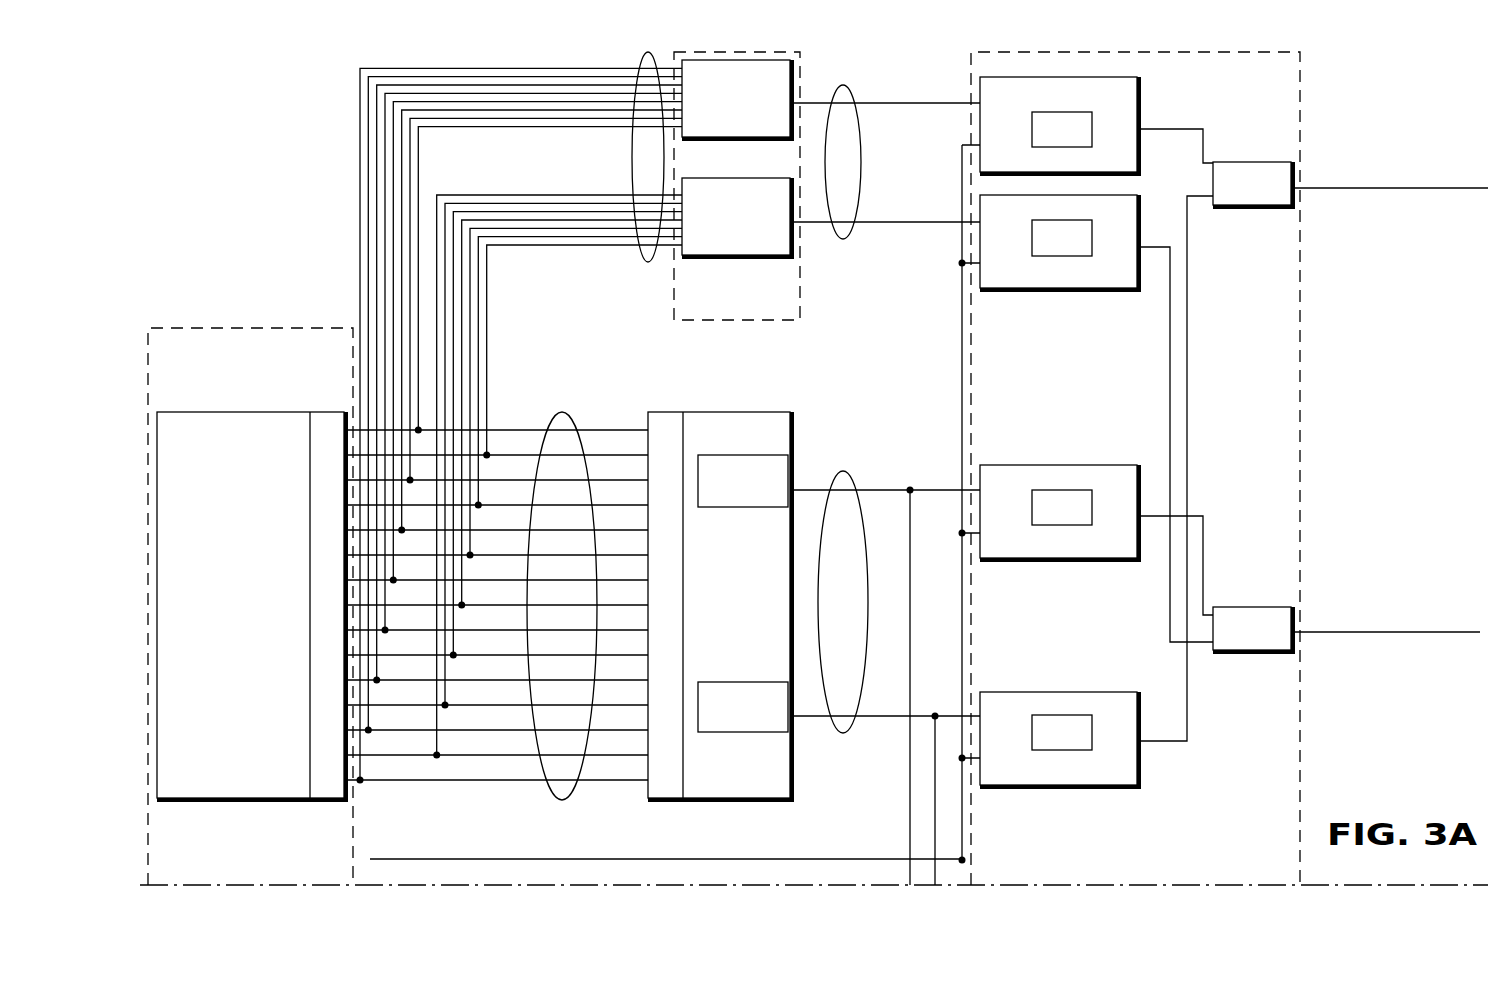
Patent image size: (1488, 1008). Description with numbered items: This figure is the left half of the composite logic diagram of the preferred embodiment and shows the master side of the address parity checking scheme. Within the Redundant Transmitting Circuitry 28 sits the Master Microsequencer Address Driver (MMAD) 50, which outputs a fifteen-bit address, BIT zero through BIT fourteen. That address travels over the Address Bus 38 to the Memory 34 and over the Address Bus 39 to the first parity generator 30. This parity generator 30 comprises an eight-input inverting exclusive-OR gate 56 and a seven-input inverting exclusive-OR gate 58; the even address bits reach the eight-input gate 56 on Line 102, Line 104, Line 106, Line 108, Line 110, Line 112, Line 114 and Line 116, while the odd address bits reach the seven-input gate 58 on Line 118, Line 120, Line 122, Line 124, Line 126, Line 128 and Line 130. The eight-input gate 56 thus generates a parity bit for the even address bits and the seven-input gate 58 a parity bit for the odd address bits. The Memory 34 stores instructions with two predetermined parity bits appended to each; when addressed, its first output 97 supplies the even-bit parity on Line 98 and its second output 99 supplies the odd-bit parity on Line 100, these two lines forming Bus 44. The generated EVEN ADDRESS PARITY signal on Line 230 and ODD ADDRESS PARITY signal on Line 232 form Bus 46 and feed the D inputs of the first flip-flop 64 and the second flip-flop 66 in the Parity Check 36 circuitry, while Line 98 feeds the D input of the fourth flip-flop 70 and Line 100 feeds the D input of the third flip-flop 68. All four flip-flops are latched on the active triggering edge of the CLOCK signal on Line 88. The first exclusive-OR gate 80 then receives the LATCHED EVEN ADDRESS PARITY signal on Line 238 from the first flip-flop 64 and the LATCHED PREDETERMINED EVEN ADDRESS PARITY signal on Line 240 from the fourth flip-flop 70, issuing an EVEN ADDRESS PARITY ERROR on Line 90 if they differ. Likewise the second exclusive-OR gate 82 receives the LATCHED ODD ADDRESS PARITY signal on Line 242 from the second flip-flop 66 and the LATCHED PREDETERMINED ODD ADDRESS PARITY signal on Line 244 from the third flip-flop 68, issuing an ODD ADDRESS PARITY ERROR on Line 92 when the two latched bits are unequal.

The Redundant Transmitting Circuitry 28 is at (212, 328).
The Parity Generator 1 30 is at (800, 290).
The Memory 34 is at (727, 412).
The Parity Check 36 is at (1300, 381).
The Address Bus 38 is at (580, 796).
The Address Bus 39 is at (632, 157).
The Bus 44 is at (853, 472).
The Bus 46 is at (838, 92).
The Master Microsequencer Address Driver (MMAD) 50 is at (183, 412).
The 8-Input XNOR-1 56 is at (715, 138).
The 7-Input XNOR-1 58 is at (715, 255).
The FF-1 64 is at (1137, 150).
The FF-2 66 is at (1030, 288).
The FF-3 68 is at (1030, 558).
The FF-4 70 is at (1028, 785).
The XOR-1 80 is at (1237, 205).
The XOR-2 82 is at (1263, 650).
The Line 88 is at (460, 857).
The Line 90 is at (1370, 188).
The Line 92 is at (1370, 632).
The OUTPUT A0 97 is at (720, 733).
The Line 98 is at (952, 712).
The OUTPUT A1 99 is at (718, 507).
The Line 100 is at (938, 489).
The Line 102 is at (418, 278).
The Line 104 is at (410, 253).
The Line 106 is at (402, 228).
The Line 108 is at (393, 203).
The Line 110 is at (385, 178).
The Line 112 is at (377, 153).
The Line 114 is at (368, 128).
The Line 116 is at (360, 105).
The Line 118 is at (488, 262).
The Line 120 is at (481, 288).
The Line 122 is at (472, 317).
The Line 124 is at (463, 338).
The Line 126 is at (455, 358).
The Line 128 is at (447, 380).
The Line 130 is at (438, 402).
The Line 230 is at (950, 102).
The Line 232 is at (942, 220).
The Line 238 is at (1172, 128).
The Line 240 is at (1187, 233).
The Line 242 is at (1198, 642).
The Line 244 is at (1203, 547).